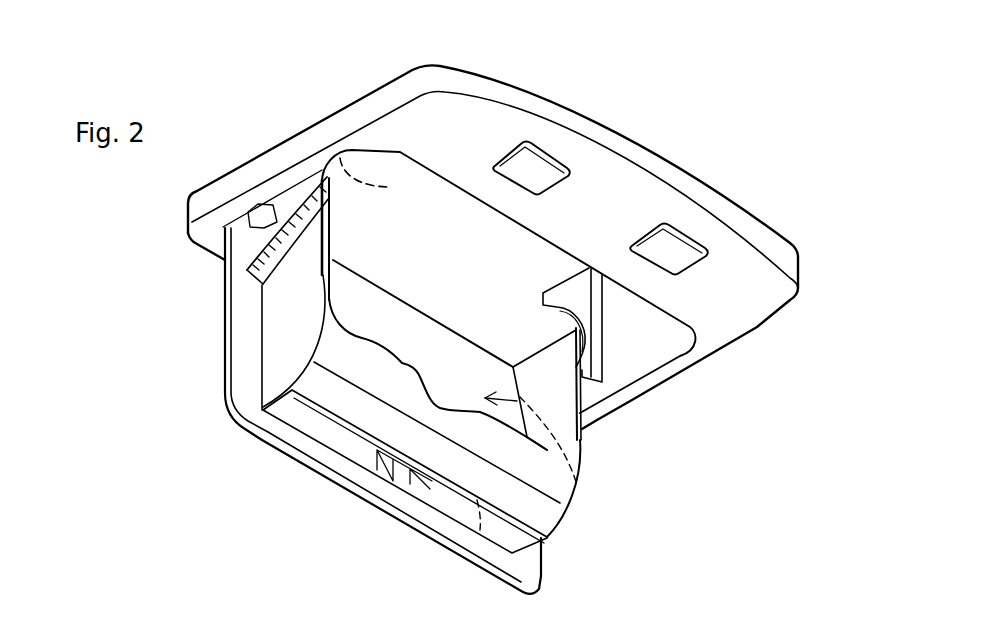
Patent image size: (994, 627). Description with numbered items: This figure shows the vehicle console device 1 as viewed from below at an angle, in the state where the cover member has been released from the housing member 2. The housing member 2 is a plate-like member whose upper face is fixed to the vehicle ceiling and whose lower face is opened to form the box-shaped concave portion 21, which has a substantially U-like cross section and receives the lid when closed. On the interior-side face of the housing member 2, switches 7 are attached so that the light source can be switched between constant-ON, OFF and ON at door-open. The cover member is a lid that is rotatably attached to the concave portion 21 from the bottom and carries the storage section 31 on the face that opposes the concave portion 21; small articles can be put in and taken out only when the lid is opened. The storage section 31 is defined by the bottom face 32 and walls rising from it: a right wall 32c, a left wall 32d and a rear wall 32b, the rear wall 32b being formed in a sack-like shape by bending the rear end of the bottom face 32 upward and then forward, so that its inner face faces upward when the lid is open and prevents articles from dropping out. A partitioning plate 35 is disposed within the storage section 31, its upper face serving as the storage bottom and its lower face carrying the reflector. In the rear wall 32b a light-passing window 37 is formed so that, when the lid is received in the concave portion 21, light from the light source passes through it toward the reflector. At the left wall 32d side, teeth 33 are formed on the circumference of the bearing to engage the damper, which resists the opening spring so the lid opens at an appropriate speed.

The vehicle console device 1 is at (776, 147).
The housing member 2 is at (757, 313).
The switches 7 is at (527, 168).
The concave portion 21 is at (340, 158).
The storage section 31 is at (575, 482).
The bottom face 32 is at (395, 498).
The rear wall 32b is at (545, 535).
The right wall 32c is at (580, 417).
The left wall 32d is at (272, 322).
The teeth 33 is at (257, 243).
The partitioning plate 35 is at (383, 328).
The light-passing window 37 is at (480, 530).